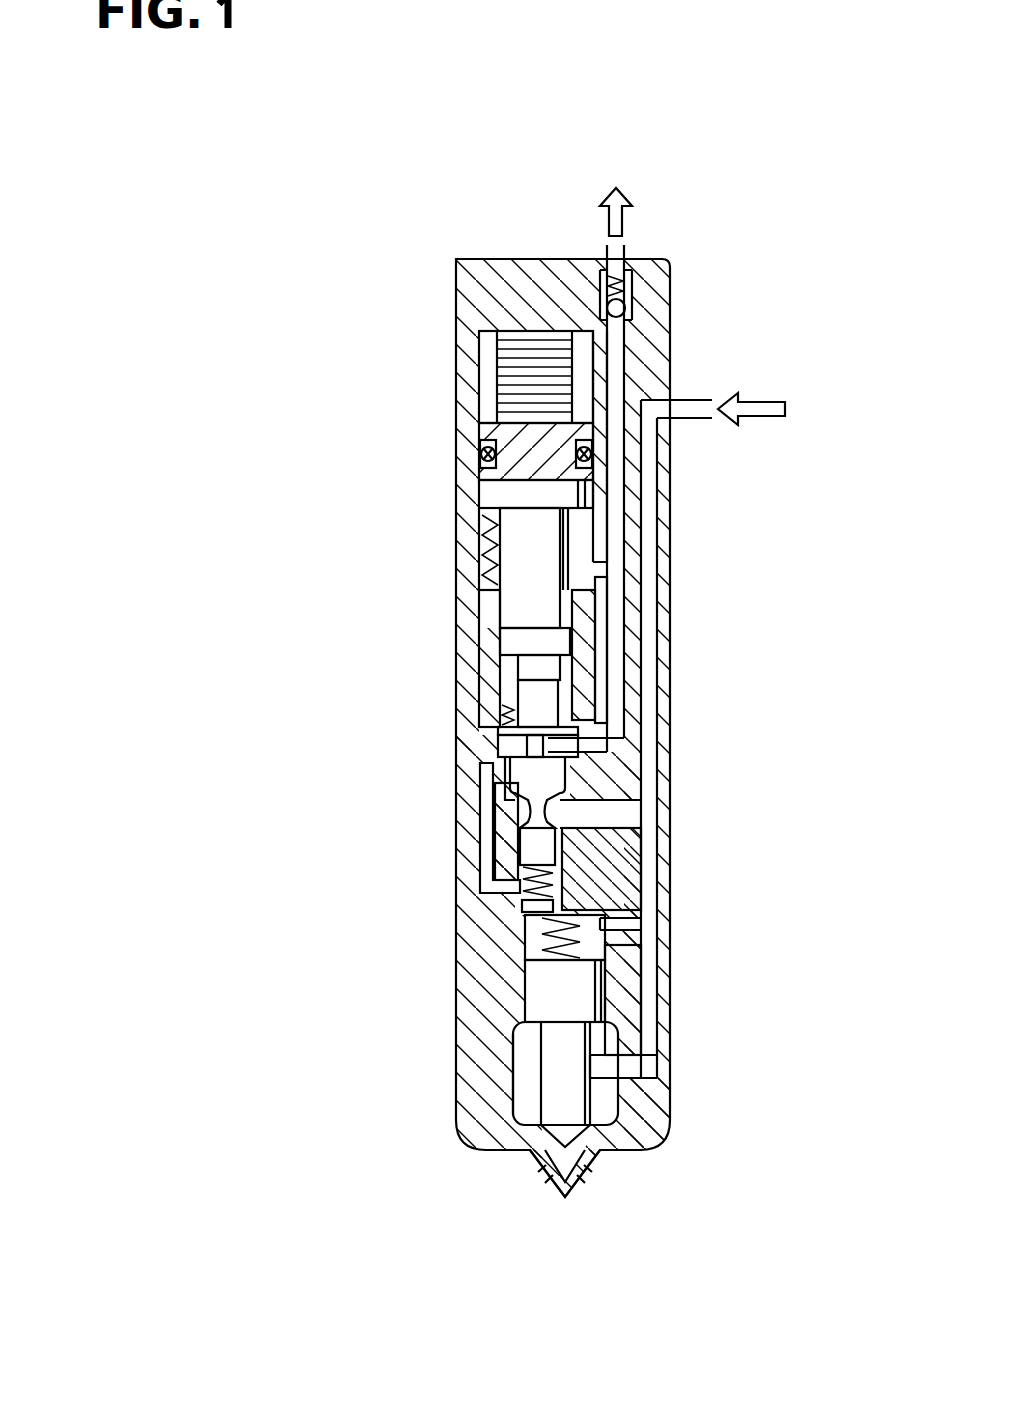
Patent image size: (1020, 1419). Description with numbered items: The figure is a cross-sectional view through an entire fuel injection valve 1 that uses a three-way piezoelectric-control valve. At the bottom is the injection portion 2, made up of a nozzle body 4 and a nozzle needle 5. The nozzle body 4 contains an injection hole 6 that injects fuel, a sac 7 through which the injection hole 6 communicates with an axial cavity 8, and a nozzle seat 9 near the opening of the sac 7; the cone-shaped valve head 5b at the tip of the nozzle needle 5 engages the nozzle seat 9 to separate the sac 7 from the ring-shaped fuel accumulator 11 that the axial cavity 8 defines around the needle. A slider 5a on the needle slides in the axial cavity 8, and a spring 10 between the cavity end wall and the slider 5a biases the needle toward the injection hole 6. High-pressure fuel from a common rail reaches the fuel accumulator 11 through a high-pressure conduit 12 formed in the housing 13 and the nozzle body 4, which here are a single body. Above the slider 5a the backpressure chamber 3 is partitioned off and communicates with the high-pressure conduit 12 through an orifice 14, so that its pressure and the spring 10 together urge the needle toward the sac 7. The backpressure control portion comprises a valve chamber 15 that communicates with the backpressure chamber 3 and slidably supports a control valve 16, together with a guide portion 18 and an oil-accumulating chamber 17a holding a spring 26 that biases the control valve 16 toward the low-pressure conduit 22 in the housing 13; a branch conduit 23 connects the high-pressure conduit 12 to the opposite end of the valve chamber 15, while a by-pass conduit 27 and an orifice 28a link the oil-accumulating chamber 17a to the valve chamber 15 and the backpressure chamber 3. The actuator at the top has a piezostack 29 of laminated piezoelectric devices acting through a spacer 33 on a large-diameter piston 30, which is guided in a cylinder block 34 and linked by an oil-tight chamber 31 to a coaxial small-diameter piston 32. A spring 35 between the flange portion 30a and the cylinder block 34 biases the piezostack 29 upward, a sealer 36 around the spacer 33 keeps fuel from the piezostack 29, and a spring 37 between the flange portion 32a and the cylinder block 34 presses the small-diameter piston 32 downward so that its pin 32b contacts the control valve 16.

The fuel injection valve 1 is at (729, 255).
The injection portion 2 is at (692, 1175).
The backpressure chamber 3 is at (535, 935).
The nozzle body 4 is at (468, 1040).
The nozzle needle 5 is at (548, 1072).
The slider 5a is at (535, 985).
The valve head 5b is at (540, 1150).
The injection hole 6 is at (540, 1165).
The sac 7 is at (565, 1192).
The axial cavity 8 is at (603, 1117).
The nozzle seat 9 is at (530, 1148).
The spring 10 is at (660, 945).
The fuel accumulator 11 is at (522, 1105).
The high-pressure conduit 12 is at (647, 607).
The housing 13 is at (655, 352).
The orifice 14 is at (640, 910).
The valve chamber 15 is at (583, 783).
The control valve 16 is at (563, 760).
The oil-accumulating chamber 17a is at (610, 880).
The guide portion 18 is at (600, 855).
The low-pressure conduit 22 is at (616, 465).
The branch conduit 23 is at (605, 815).
The spring 26 is at (485, 868).
The by-pass conduit 27 is at (488, 805).
The orifice 28a is at (515, 905).
The piezostack 29 is at (495, 388).
The large-diameter piston 30 is at (555, 527).
The flange portion 30a is at (490, 492).
The oil-tight chamber 31 is at (515, 668).
The small-diameter piston 32 is at (580, 695).
The flange portion 32a is at (500, 735).
The pin 32b is at (600, 738).
The spacer 33 is at (480, 430).
The cylinder block 34 is at (500, 602).
The spring 35 is at (487, 540).
The sealer 36 is at (492, 455).
The spring 37 is at (505, 717).